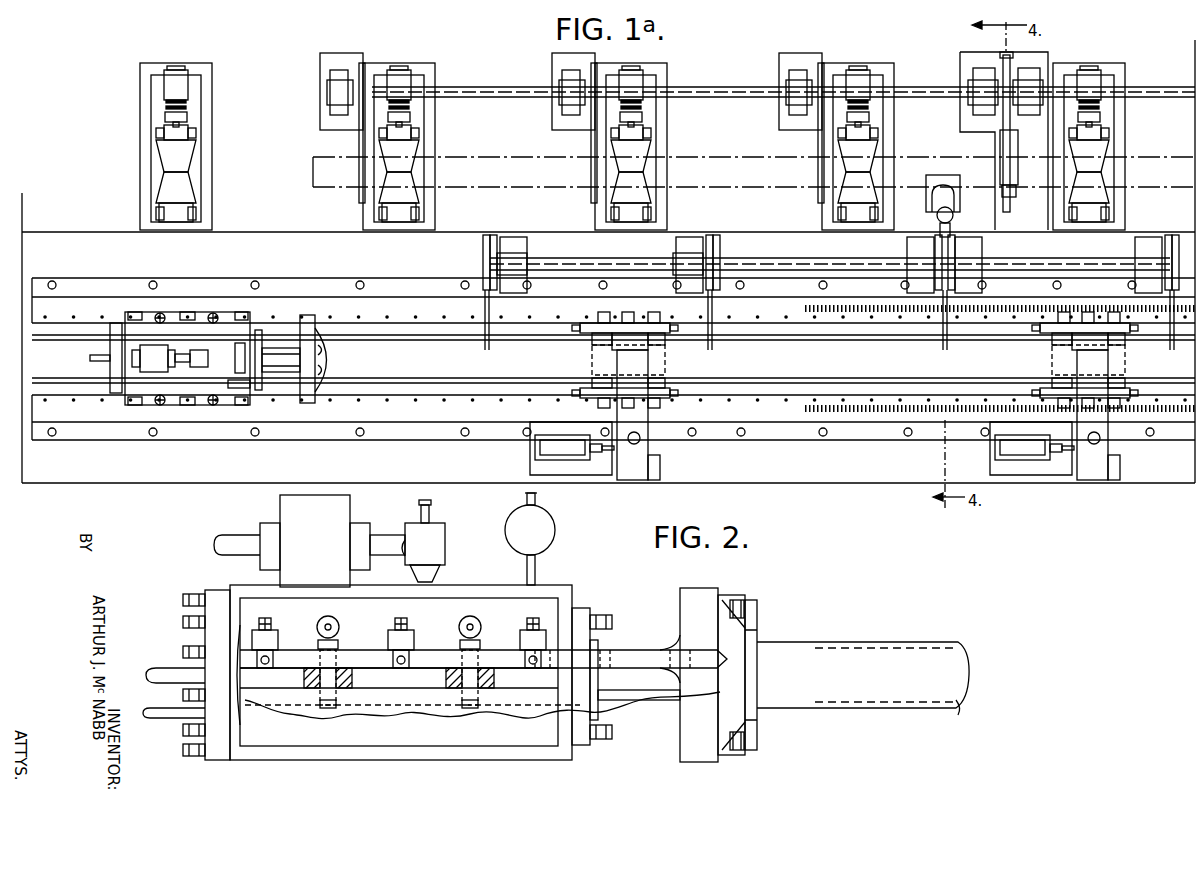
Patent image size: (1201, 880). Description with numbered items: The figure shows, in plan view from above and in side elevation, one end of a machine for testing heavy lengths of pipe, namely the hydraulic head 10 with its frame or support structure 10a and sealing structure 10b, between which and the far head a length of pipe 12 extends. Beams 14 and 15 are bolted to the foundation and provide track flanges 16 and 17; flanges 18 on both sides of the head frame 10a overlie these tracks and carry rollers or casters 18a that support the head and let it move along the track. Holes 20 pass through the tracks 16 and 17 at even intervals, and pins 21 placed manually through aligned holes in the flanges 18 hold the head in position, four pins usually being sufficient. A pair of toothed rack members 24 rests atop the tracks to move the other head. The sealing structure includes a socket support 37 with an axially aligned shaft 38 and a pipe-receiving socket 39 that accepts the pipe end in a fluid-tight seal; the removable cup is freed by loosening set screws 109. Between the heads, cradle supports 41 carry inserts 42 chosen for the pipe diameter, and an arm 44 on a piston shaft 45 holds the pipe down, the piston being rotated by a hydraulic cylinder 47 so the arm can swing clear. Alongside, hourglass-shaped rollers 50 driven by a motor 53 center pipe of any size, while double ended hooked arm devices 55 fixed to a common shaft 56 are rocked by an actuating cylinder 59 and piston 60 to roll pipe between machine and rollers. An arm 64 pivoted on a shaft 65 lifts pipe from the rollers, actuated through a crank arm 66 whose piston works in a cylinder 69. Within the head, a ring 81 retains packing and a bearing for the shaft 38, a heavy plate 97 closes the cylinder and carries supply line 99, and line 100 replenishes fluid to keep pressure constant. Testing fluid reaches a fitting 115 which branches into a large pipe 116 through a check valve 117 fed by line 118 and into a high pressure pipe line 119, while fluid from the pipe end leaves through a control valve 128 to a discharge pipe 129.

In FIG. 1a, the head 10 is at (226, 305).
In FIG. 2, the head 10 is at (575, 581).
In FIG. 1a, the frame or support structure 10a is at (141, 328).
In FIG. 2, the frame or support structure 10a is at (346, 761).
In FIG. 1a, the sealing structure 10b is at (306, 318).
In FIG. 2, the sealing structure 10b is at (700, 762).
In FIG. 1a, the pipe 12 is at (748, 157).
In FIG. 2, the pipe 12 is at (896, 648).
In FIG. 1a, the beam 14 is at (789, 428).
In FIG. 2, the beam 14 is at (417, 720).
In FIG. 1a, the beam 15 is at (422, 293).
In FIG. 1a, the track flange 16 is at (542, 396).
In FIG. 2, the track flange 16 is at (628, 660).
In FIG. 1a, the track flange 17 is at (458, 322).
In FIG. 2, the flange 18 is at (364, 650).
In FIG. 2, the rollers or casters 18a is at (272, 658).
In FIG. 1a, the holes 20 is at (390, 315).
In FIG. 2, the holes 20 is at (362, 706).
In FIG. 1a, the pins 21 is at (211, 314).
In FIG. 2, the pins 21 is at (325, 690).
In FIG. 1a, the toothed rack members 24 is at (878, 306).
In FIG. 1a, the socket support 37 is at (312, 403).
In FIG. 2, the socket support 37 is at (683, 596).
In FIG. 1a, the shaft 38 is at (286, 373).
In FIG. 2, the shaft 38 is at (652, 701).
In FIG. 1a, the pipe-receiving socket 39 is at (333, 359).
In FIG. 2, the pipe-receiving socket 39 is at (751, 632).
In FIG. 1a, the cradle supports 41 is at (620, 322).
In FIG. 1a, the insert 42 is at (592, 358).
In FIG. 1a, the arm 44 is at (858, 412).
In FIG. 1a, the piston shaft 45 is at (634, 445).
In FIG. 1a, the hydraulic cylinder 47 is at (548, 450).
In FIG. 1a, the rollers 50 is at (190, 157).
In FIG. 1a, the motor 53 is at (173, 69).
In FIG. 1a, the double ended hooked arm devices 55 is at (492, 303).
In FIG. 1a, the common shaft 56 is at (842, 258).
In FIG. 1a, the actuating cylinder 59 is at (956, 200).
In FIG. 1a, the piston 60 is at (937, 216).
In FIG. 1a, the arm 64 is at (361, 150).
In FIG. 1a, the shaft 65 is at (783, 79).
In FIG. 1a, the arm 66 is at (1004, 60).
In FIG. 1a, the cylinder 69 is at (1013, 165).
In FIG. 2, the ring 81 is at (585, 609).
In FIG. 2, the heavy plate 97 is at (211, 594).
In FIG. 2, the supply line 99 is at (173, 668).
In FIG. 2, the line 100 is at (170, 718).
In FIG. 2, the set screws 109 is at (746, 604).
In FIG. 2, the fitting 115 is at (440, 541).
In FIG. 2, the pipe 116 is at (378, 536).
In FIG. 2, the check valve 117 is at (315, 541).
In FIG. 2, the line 118 is at (228, 537).
In FIG. 2, the high pressure pipe line 119 is at (430, 504).
In FIG. 2, the control valve 128 is at (556, 534).
In FIG. 2, the discharge pipe 129 is at (537, 500).